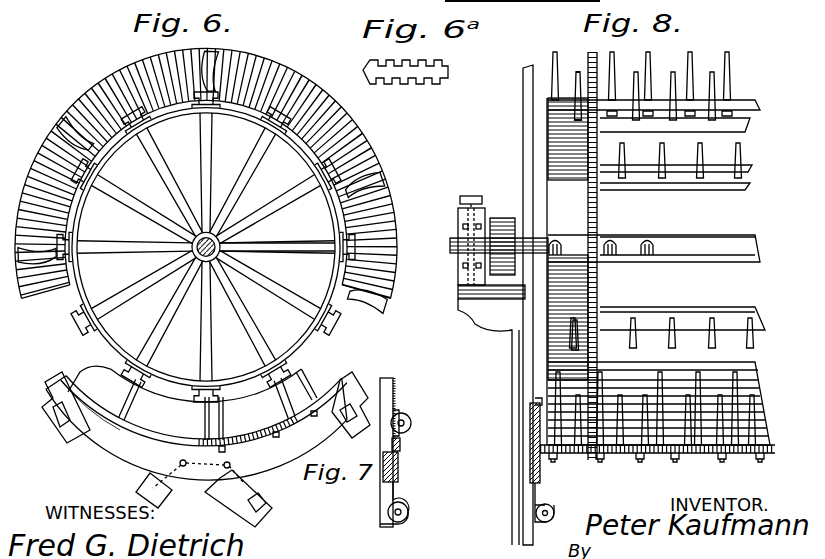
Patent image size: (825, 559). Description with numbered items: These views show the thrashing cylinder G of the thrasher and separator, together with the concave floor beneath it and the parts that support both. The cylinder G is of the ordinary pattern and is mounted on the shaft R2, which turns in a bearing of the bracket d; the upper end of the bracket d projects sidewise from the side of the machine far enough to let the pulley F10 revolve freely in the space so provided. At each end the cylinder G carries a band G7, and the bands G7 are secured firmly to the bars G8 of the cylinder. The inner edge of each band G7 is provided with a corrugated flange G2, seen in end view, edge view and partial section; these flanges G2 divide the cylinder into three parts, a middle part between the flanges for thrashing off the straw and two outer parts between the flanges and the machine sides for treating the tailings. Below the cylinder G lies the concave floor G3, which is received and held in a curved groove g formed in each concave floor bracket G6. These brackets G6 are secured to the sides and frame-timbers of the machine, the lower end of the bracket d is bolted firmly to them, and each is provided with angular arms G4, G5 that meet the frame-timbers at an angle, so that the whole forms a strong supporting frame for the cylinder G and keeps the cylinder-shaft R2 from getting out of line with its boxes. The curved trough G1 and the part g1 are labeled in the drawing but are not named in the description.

In FIG. 6, the cylinder G is at (206, 247).
In FIG. 8, the cylinder G is at (610, 262).
In FIG. 6, the curved trough / scoop G' G1 is at (196, 423).
In FIG. 6, the corrugated flange G2 is at (48, 150).
In FIG. 6A, the corrugated flange G2 is at (405, 83).
In FIG. 8, the concave floor G3 is at (640, 440).
In FIG. 6, the angular arm G4 is at (210, 478).
In FIG. 7, the angular arm G4 is at (403, 503).
In FIG. 8, the angular arm G4 is at (552, 510).
In FIG. 6, the angular arm G5 is at (67, 390).
In FIG. 7, the angular arm G5 is at (408, 419).
In FIG. 6, the concave floor bracket G6 is at (198, 469).
In FIG. 7, the concave floor bracket G6 is at (404, 467).
In FIG. 8, the concave floor bracket G6 is at (541, 470).
In FIG. 8, the band G7 is at (590, 202).
In FIG. 8, the bar G8 is at (662, 240).
In FIG. 6, the shaft R2 is at (250, 240).
In FIG. 8, the shaft R2 is at (693, 236).
In FIG. 8, the pulley F10 is at (478, 212).
In FIG. 8, the bracket d is at (495, 305).
In FIG. 7, the curved groove g is at (396, 452).
In FIG. 8, the curved groove g is at (548, 452).
In FIG. 6, the small block g' g1 is at (150, 435).